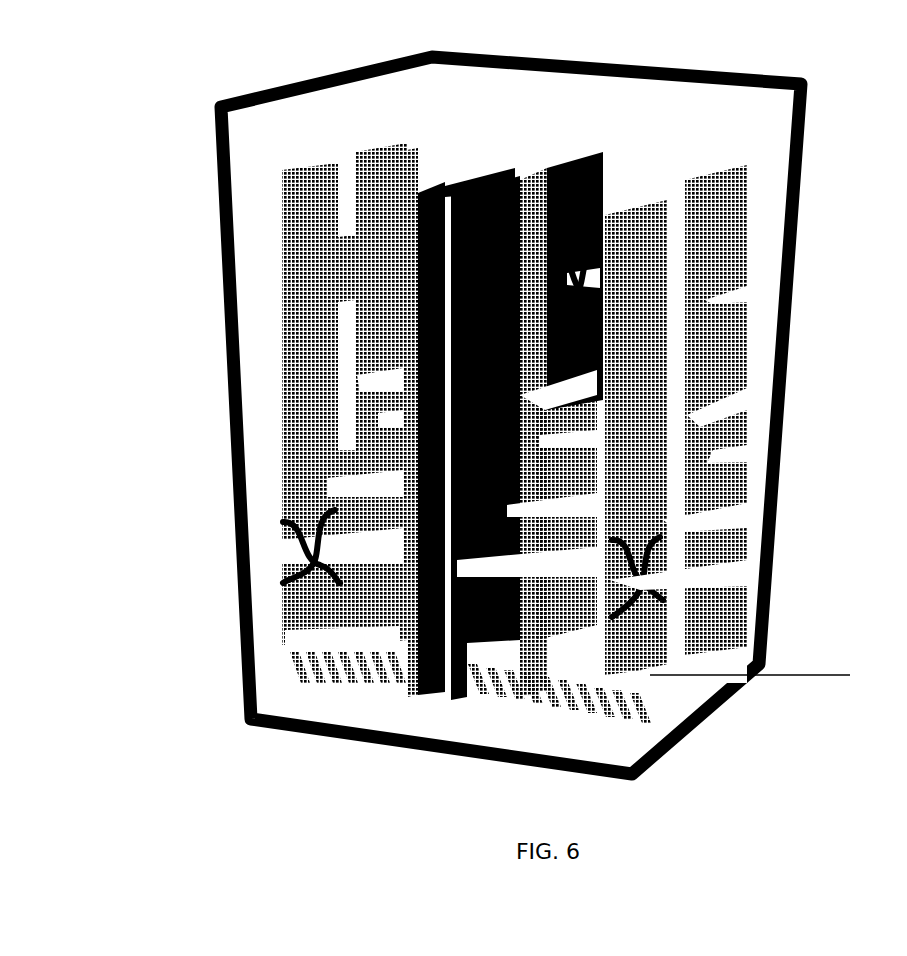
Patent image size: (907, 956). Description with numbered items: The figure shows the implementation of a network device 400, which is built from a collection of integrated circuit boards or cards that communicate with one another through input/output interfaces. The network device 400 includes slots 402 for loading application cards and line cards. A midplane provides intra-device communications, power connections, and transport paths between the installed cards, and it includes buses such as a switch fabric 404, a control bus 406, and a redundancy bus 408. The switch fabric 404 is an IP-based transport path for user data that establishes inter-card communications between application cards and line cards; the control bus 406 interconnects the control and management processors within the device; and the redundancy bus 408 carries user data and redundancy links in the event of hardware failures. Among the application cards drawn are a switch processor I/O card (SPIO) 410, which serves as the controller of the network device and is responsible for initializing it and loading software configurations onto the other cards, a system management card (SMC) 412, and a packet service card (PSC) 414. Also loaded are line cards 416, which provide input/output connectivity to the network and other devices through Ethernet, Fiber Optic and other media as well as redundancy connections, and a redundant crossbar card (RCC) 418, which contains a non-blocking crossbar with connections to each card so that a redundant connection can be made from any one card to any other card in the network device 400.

The network device 400 is at (765, 85).
The slots 402 is at (520, 705).
The switch fabric 404 is at (655, 576).
The control bus 406 is at (700, 520).
The redundancy bus 408 is at (821, 377).
The switch processor I/O card (SPIO) 410 is at (607, 180).
The system management card (SMC) 412 is at (483, 187).
The packet service card (PSC) 414 is at (275, 350).
The line cards 416 is at (720, 168).
The redundant crossbar card (RCC) 418 is at (552, 640).